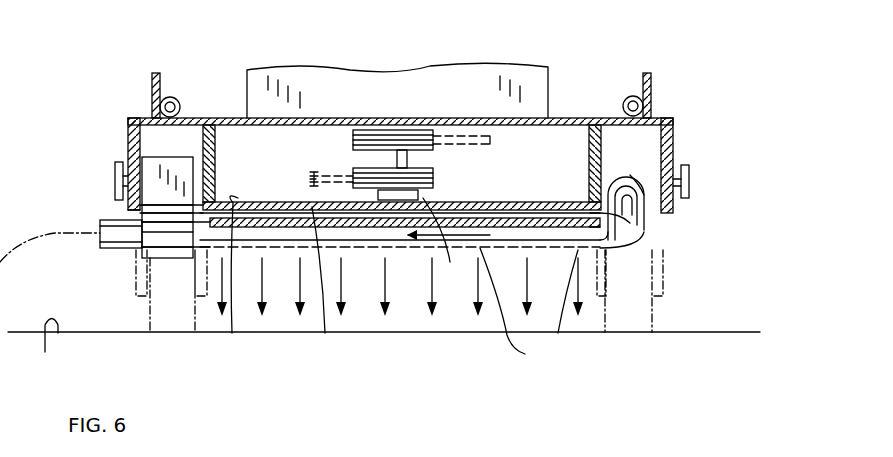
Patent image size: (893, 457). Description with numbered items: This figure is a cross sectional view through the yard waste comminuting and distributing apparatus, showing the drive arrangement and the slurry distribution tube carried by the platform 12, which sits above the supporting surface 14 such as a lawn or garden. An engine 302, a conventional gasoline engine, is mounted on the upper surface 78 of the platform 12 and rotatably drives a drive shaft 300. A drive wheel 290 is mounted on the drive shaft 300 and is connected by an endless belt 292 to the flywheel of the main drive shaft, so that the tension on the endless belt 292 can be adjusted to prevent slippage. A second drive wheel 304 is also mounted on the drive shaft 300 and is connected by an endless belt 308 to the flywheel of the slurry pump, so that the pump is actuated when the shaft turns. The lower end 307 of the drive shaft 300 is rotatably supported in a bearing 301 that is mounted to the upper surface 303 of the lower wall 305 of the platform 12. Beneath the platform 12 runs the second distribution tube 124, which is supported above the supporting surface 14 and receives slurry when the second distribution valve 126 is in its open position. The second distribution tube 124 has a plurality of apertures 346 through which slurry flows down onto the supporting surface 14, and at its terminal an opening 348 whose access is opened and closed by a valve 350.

The platform 12 is at (126, 130).
The supporting surface 14 is at (384, 354).
The upper surface 78 is at (222, 117).
The second distribution tube 124 is at (648, 226).
The second distribution valve 126 is at (660, 154).
The drive wheel 290 is at (433, 178).
The endless belt 292 is at (310, 178).
The drive shaft 300 is at (392, 160).
The bearing 301 is at (446, 243).
The engine 302 is at (250, 80).
The upper surface 303 is at (231, 282).
The second drive wheel 304 is at (420, 133).
The lower wall 305 is at (324, 288).
The end 307 is at (400, 200).
The endless belt 308 is at (492, 140).
The apertures 346 is at (524, 308).
The opening 348 is at (100, 228).
The valve 350 is at (153, 195).